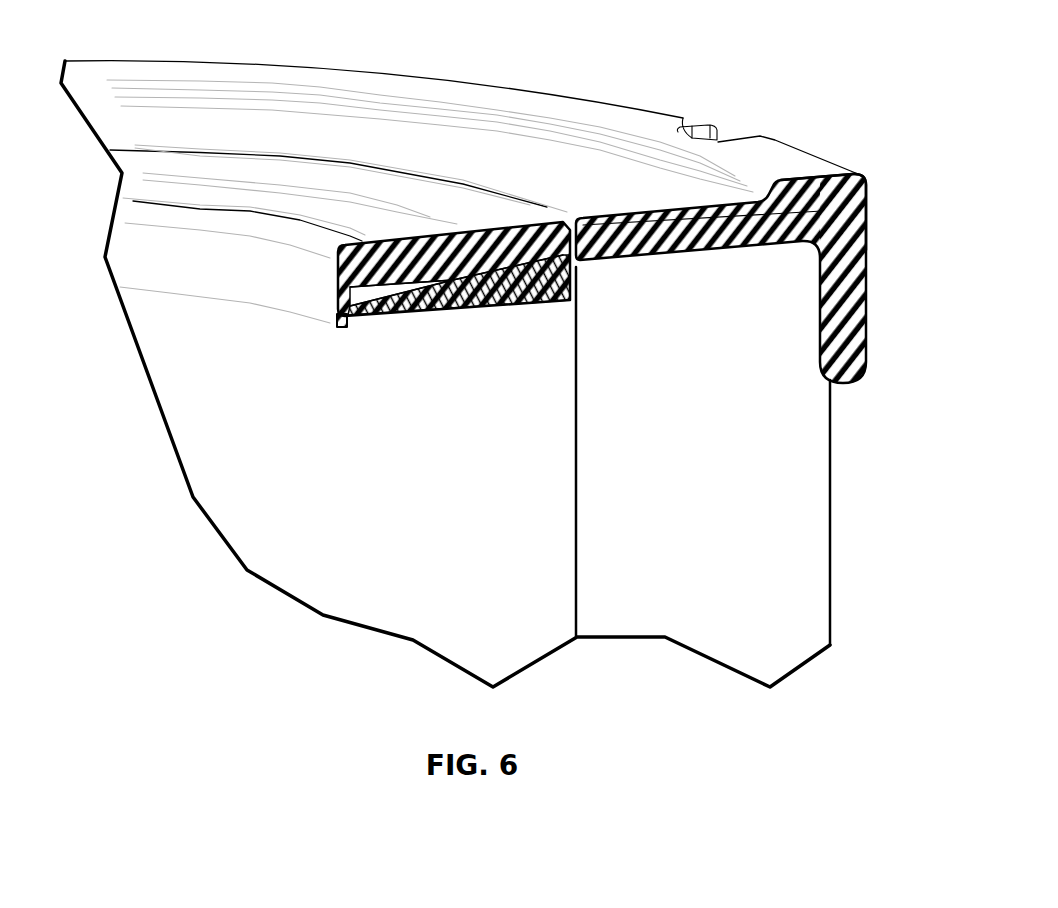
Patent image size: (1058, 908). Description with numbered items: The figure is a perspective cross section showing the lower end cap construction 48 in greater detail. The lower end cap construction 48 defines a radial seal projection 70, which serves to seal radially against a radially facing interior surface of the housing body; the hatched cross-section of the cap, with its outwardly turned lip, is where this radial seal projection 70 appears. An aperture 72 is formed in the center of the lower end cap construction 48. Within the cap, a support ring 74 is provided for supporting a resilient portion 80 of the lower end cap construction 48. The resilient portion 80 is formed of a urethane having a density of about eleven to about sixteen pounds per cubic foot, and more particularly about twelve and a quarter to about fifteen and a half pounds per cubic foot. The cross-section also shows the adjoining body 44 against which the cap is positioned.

The housing 44 is at (830, 488).
The lower end cap construction 48 is at (890, 192).
The radial seal projection 70 is at (867, 298).
The aperture 72 is at (270, 237).
The support ring 74 is at (447, 305).
The resilient portion 80 is at (503, 152).